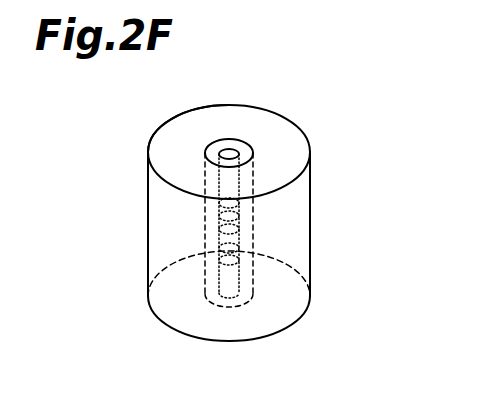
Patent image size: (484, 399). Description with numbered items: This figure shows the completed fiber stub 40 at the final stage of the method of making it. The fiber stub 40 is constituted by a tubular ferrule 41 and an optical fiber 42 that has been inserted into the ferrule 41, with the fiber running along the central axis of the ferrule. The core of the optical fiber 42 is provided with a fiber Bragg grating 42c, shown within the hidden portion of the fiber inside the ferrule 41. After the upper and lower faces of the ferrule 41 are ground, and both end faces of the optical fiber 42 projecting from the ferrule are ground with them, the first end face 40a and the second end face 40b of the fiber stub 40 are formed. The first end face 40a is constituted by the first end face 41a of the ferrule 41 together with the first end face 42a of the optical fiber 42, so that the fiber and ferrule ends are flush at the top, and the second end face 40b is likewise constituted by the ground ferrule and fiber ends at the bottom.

The fiber stub 40 is at (246, 213).
The first end face of the fiber stub 40a is at (282, 137).
The second end face of the fiber stub 40b is at (268, 298).
The ferrule 41 is at (310, 258).
The first end face of the ferrule 41a is at (168, 136).
The optical fiber 42 is at (167, 213).
The first end face of the optical fiber 42a is at (220, 142).
The fiber Bragg grating 42c is at (205, 236).